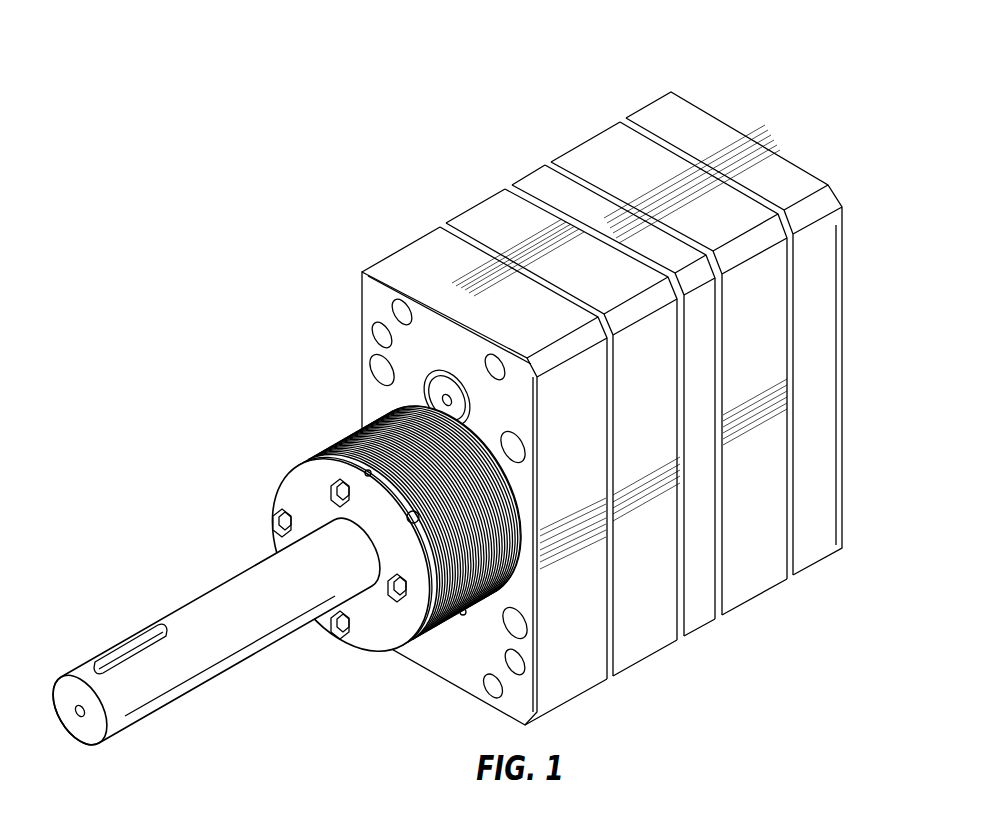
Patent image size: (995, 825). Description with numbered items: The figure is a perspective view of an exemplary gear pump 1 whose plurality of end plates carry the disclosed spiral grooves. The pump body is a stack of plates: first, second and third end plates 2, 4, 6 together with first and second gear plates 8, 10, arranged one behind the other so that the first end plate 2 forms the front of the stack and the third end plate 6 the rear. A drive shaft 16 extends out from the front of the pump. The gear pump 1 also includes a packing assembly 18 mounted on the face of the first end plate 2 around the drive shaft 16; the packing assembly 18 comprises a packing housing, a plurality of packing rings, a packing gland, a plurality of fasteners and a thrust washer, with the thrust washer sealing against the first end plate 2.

The gear pump 1 is at (442, 393).
The first end plate 2 is at (422, 262).
The second end plate 4 is at (536, 180).
The third end plate 6 is at (810, 543).
The first gear plate 8 is at (483, 210).
The second gear plate 10 is at (751, 571).
The drive shaft 16 is at (187, 693).
The packing assembly 18 is at (254, 433).